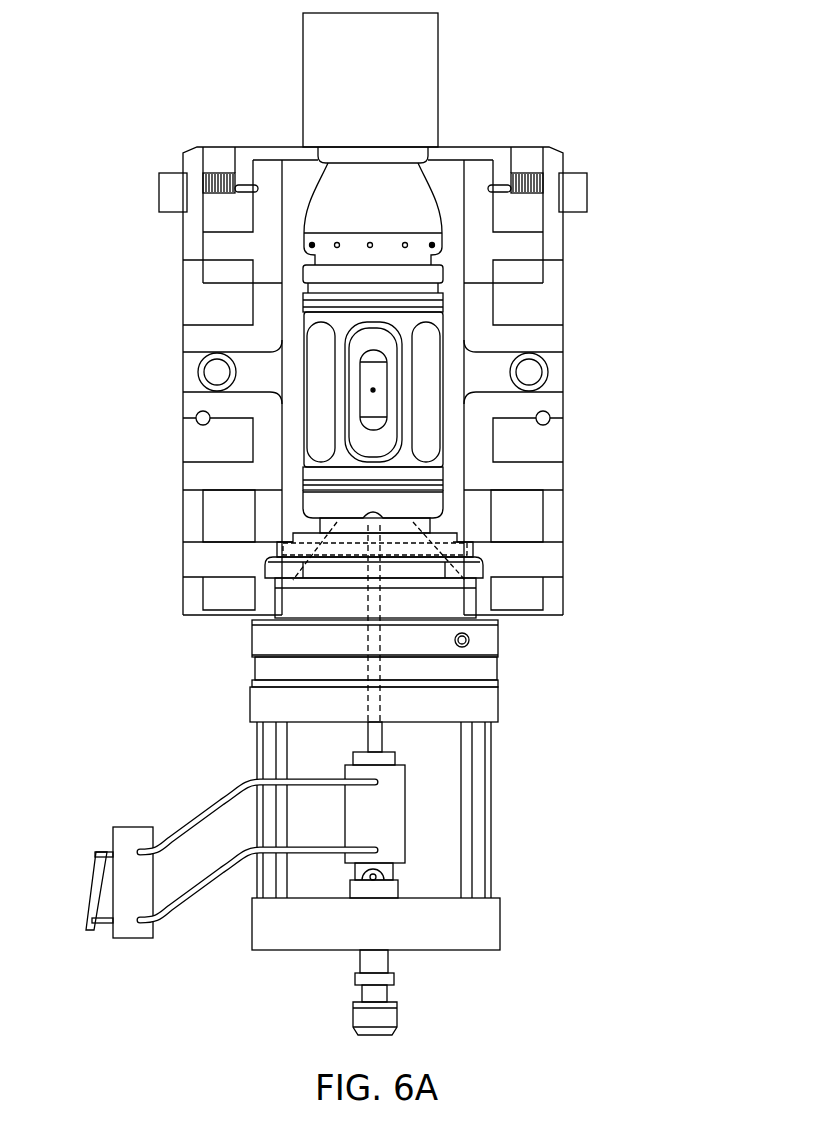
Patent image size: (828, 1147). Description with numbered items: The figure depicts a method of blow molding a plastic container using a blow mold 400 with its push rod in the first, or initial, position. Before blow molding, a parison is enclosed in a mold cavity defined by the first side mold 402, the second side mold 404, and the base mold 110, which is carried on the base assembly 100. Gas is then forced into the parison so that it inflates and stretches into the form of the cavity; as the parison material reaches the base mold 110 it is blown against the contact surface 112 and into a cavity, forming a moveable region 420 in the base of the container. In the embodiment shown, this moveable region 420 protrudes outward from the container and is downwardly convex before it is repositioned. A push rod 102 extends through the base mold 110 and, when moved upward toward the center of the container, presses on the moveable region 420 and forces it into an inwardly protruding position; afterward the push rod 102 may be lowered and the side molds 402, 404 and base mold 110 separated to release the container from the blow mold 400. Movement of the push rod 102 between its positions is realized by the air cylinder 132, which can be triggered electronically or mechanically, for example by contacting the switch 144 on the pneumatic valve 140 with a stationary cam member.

The blow mold 400 is at (420, 314).
The first side mold 402 is at (195, 312).
The second side mold 404 is at (553, 343).
The base mold 110 is at (427, 523).
The contact surface 112 is at (478, 588).
The moveable region 420 is at (272, 588).
The push rod 102 is at (397, 630).
The base assembly 100 is at (490, 703).
The air cylinder 132 is at (390, 810).
The pneumatic valve 140 is at (128, 932).
The switch 144 is at (88, 903).